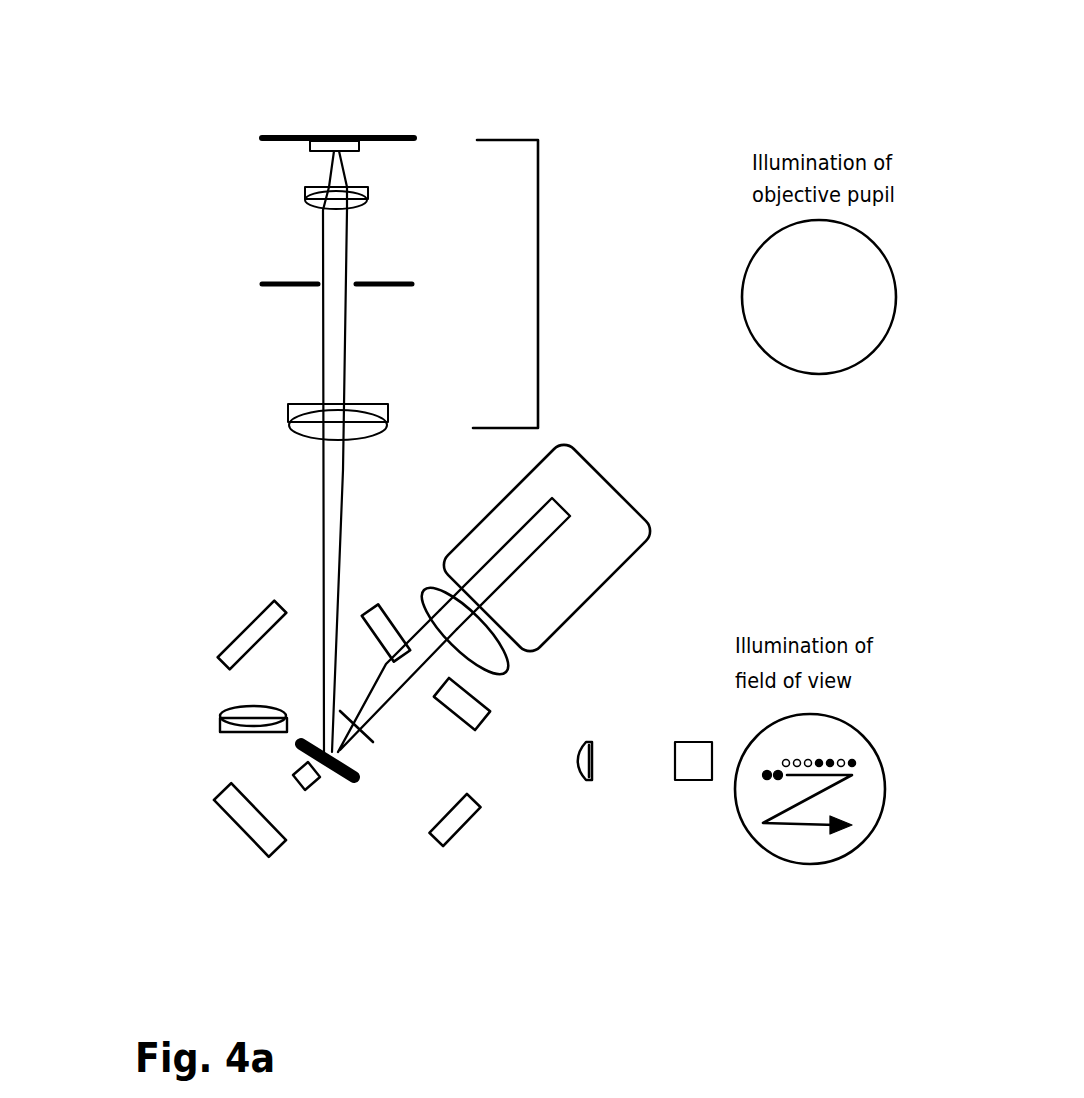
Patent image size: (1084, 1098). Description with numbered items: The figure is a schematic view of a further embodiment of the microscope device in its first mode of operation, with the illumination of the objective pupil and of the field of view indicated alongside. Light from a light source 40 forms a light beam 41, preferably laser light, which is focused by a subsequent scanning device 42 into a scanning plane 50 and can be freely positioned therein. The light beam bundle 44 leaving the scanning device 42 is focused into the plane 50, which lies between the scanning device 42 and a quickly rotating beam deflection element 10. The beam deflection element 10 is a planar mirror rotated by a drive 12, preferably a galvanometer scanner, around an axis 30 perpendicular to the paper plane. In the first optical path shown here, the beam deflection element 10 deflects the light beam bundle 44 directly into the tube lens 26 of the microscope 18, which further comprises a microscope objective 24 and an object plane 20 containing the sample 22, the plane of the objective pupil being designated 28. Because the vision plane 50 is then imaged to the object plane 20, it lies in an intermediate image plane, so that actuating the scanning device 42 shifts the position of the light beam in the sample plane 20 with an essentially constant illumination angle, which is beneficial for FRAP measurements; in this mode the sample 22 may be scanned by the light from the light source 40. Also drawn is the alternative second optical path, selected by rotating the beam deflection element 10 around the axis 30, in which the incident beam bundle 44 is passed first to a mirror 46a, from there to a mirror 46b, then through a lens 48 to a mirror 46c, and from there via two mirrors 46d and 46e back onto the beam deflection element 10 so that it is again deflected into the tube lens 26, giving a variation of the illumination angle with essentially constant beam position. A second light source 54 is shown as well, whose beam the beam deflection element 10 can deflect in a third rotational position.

The beam deflection element 10 is at (373, 785).
The drive 12 is at (297, 760).
The microscope 18 is at (538, 243).
The object plane 20 is at (398, 137).
The sample 22 is at (326, 137).
The microscope objective 24 is at (306, 193).
The tube lens 26 is at (290, 418).
The plane of the objective pupil 28 is at (267, 287).
The axis 30 is at (330, 777).
The light source 40 is at (592, 478).
The light beam 41 is at (540, 527).
The scanning device 42 is at (512, 628).
The light beam bundle 44 is at (392, 688).
The mirror 46a is at (392, 613).
The mirror 46b is at (243, 628).
The mirror 46c is at (247, 824).
The mirror 46d is at (458, 820).
The mirror 46e is at (465, 704).
The lens 48 is at (220, 718).
The scanning plane 50 is at (375, 727).
The second light source 54 is at (696, 780).